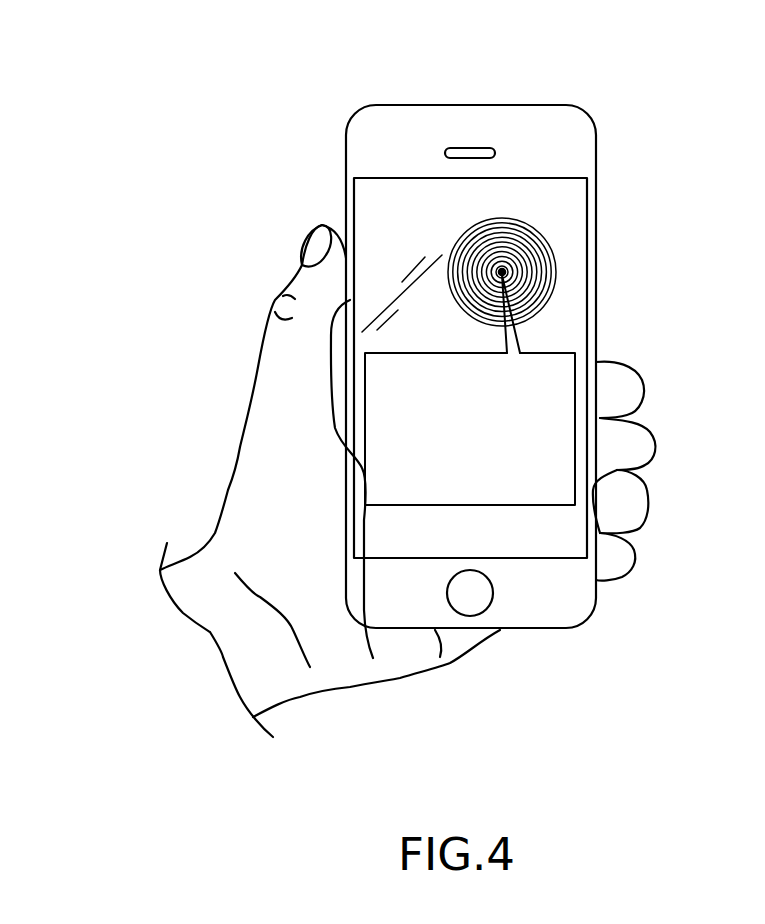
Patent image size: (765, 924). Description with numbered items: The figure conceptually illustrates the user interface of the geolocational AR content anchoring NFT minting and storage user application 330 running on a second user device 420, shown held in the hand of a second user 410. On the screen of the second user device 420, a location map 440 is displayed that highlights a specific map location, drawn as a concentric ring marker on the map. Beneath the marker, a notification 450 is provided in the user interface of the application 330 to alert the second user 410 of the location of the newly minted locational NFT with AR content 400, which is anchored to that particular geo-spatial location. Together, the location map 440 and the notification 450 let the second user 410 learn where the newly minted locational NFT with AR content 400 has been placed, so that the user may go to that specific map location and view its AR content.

The newly minted locational NFT with AR content 400 is at (213, 75).
The second user 410 is at (278, 402).
The second user device 420 is at (565, 142).
The geolocational AR content anchoring NFT minting and storage user application 330 is at (567, 546).
The location map 440 is at (417, 258).
The notification 450 is at (423, 380).